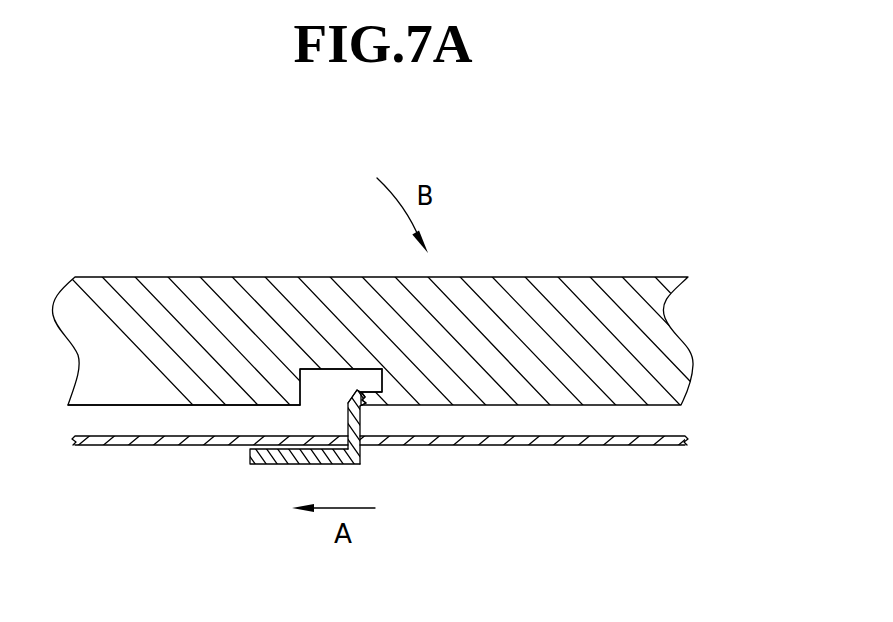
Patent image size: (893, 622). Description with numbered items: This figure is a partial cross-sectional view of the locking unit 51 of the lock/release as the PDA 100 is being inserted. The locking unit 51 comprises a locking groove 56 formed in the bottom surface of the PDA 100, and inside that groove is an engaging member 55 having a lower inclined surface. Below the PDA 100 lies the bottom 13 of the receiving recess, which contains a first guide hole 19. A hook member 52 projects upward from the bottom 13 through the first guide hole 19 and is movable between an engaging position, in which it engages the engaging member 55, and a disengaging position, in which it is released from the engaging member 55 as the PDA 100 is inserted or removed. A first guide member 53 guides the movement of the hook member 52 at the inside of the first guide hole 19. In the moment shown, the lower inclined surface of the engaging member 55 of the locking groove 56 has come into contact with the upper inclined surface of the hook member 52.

The PDA 100 is at (547, 290).
The bottom of the receiving recess 13 is at (583, 437).
The first guide hole 19 is at (298, 404).
The locking unit 51 is at (401, 423).
The hook member 52 is at (361, 458).
The first guide member 53 is at (263, 464).
The engaging member 55 is at (360, 391).
The locking groove 56 is at (318, 380).